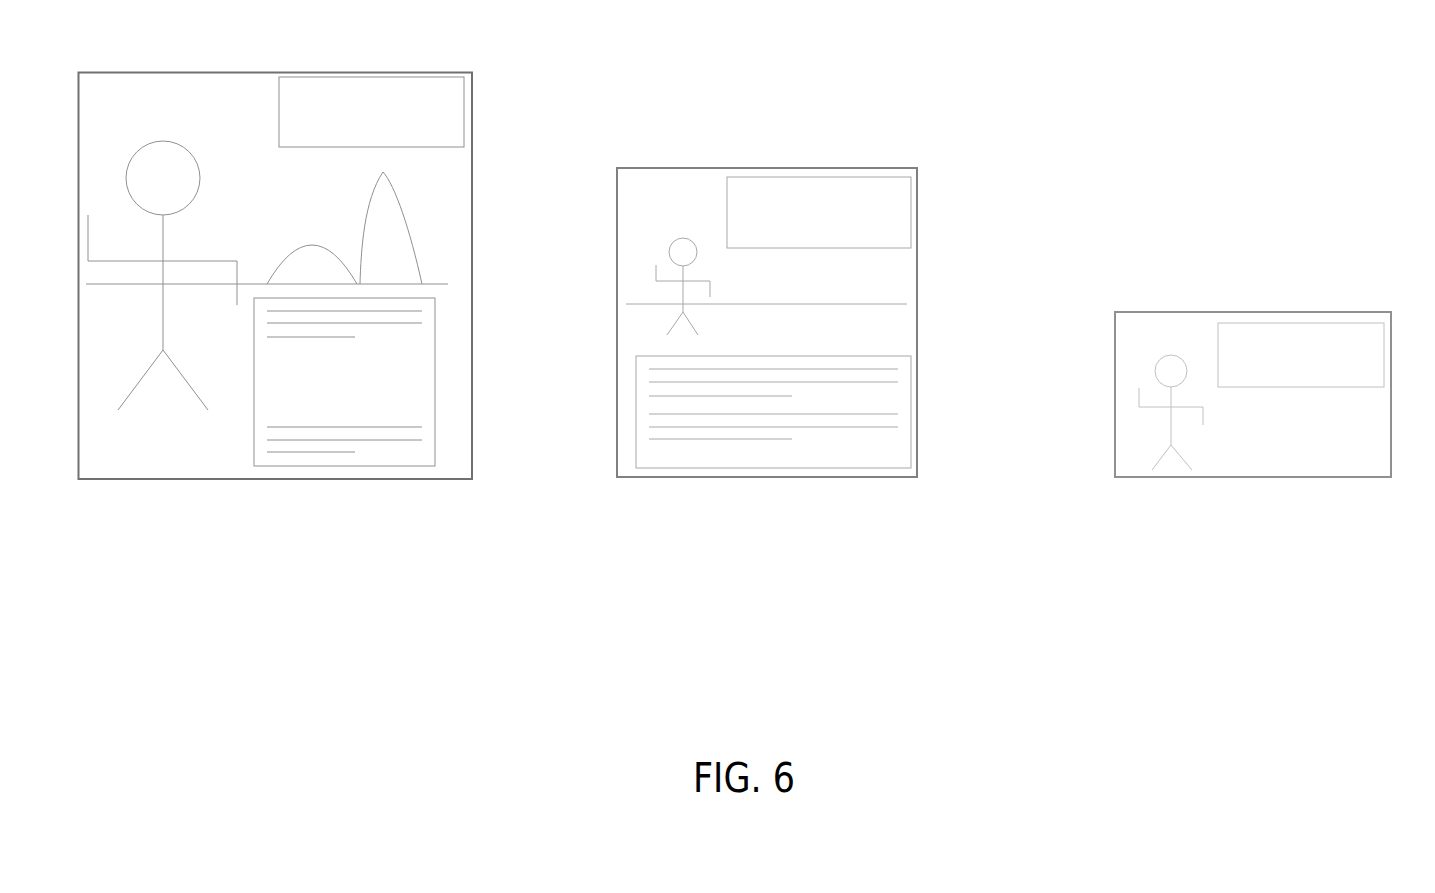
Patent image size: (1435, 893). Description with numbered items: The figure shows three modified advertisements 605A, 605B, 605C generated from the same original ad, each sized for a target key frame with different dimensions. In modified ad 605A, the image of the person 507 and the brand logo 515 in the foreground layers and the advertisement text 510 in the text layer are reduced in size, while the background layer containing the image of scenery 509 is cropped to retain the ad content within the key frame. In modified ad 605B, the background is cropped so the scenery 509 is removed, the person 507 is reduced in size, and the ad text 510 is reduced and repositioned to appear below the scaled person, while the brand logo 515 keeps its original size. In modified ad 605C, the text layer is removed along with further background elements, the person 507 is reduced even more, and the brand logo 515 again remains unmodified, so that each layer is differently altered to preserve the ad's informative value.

The image of a person 507 is at (162, 142).
The image of scenery 509 is at (400, 195).
The advertisement text 510 is at (323, 423).
The brand logo 515 is at (350, 137).
The modified advertisement 605A is at (275, 503).
The modified advertisement 605B is at (767, 503).
The modified advertisement 605C is at (1253, 503).